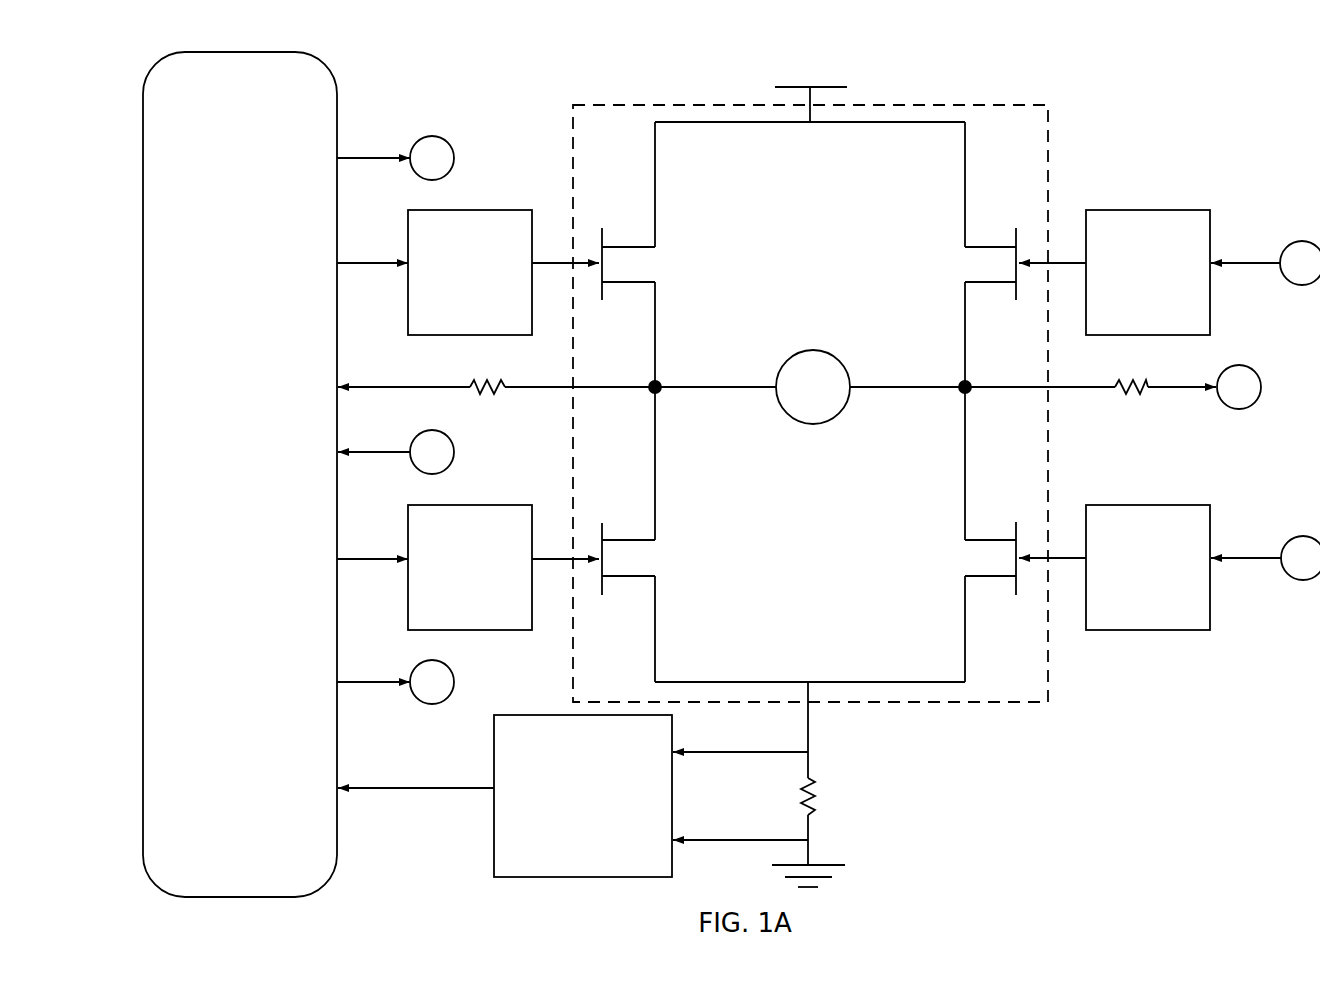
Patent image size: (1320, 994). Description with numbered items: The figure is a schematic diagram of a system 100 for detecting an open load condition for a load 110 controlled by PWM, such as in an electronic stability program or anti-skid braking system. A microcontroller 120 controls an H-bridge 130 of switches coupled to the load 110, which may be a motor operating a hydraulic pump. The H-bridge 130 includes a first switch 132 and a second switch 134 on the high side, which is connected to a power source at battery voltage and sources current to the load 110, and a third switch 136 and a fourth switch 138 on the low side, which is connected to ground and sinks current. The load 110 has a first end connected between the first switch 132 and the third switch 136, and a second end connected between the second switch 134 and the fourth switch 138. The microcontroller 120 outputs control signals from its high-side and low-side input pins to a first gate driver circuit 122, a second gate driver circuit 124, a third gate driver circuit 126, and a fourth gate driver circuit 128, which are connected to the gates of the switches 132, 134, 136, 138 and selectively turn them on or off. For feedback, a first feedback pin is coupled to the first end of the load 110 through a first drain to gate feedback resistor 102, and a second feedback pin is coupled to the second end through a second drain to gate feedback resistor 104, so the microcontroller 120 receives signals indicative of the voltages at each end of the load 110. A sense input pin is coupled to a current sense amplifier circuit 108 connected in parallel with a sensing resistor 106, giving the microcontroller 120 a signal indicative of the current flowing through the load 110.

The system 100 is at (614, 66).
The first drain to gate feedback resistor 102 is at (485, 393).
The second drain to gate feedback resistor 104 is at (1127, 393).
The sensing resistor 106 is at (817, 800).
The current sense amplifier circuit 108 is at (512, 853).
The load 110 is at (815, 350).
The microcontroller 120 is at (282, 132).
The first gate driver circuit 122 is at (468, 230).
The second gate driver circuit 124 is at (1145, 218).
The third gate driver circuit 126 is at (468, 520).
The fourth gate driver circuit 128 is at (1145, 515).
The H-bridge 130 is at (1020, 158).
The first switch 132 is at (659, 266).
The second switch 134 is at (966, 262).
The third switch 136 is at (663, 556).
The fourth switch 138 is at (959, 566).